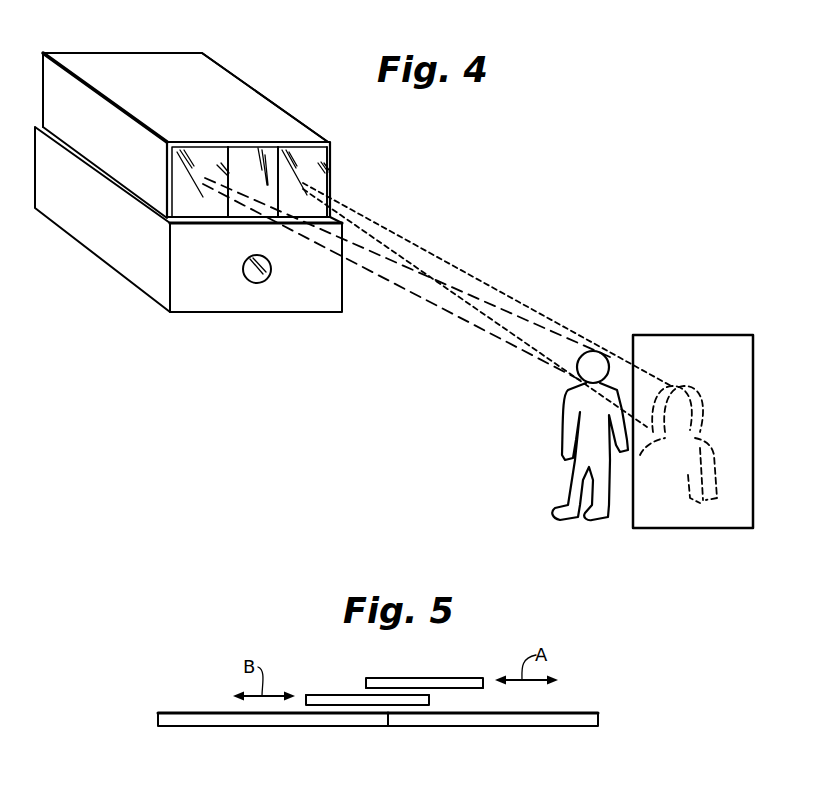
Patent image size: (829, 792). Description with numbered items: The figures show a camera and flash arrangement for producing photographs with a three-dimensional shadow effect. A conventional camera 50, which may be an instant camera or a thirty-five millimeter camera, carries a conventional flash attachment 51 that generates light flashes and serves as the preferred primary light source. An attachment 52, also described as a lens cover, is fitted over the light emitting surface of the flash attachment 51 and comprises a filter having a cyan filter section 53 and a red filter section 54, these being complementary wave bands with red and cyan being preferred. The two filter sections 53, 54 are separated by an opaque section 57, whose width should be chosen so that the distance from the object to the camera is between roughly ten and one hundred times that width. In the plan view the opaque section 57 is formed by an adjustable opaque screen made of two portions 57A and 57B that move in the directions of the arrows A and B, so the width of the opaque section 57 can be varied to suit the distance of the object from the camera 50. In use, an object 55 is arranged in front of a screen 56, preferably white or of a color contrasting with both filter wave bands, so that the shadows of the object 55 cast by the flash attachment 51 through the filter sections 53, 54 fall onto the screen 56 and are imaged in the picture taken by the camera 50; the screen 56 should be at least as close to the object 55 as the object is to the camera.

In FIG. 4, the camera 50 is at (121, 258).
In FIG. 4, the flash attachment 51 is at (257, 86).
In FIG. 4, the attachment 52 is at (142, 63).
In FIG. 4, the cyan filter section 53 is at (169, 158).
In FIG. 5, the cyan filter section 53 is at (267, 722).
In FIG. 4, the red filter section 54 is at (330, 158).
In FIG. 5, the red filter section 54 is at (502, 724).
In FIG. 4, the object 55 is at (568, 412).
In FIG. 4, the screen 56 is at (695, 338).
In FIG. 4, the opaque section 57 is at (252, 150).
In FIG. 5, the opaque section 57 is at (358, 671).
In FIG. 5, the adjustable opaque screen 57A is at (410, 678).
In FIG. 5, the adjustable opaque screen 57B is at (343, 695).